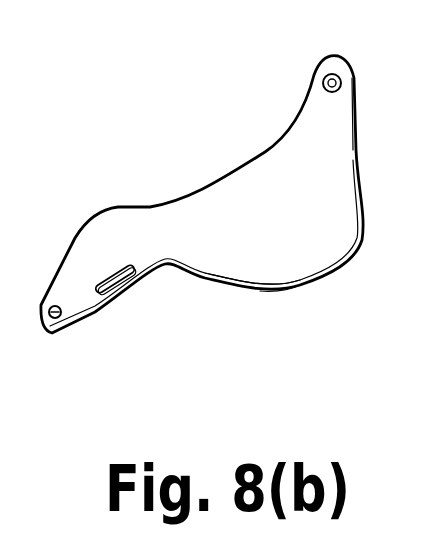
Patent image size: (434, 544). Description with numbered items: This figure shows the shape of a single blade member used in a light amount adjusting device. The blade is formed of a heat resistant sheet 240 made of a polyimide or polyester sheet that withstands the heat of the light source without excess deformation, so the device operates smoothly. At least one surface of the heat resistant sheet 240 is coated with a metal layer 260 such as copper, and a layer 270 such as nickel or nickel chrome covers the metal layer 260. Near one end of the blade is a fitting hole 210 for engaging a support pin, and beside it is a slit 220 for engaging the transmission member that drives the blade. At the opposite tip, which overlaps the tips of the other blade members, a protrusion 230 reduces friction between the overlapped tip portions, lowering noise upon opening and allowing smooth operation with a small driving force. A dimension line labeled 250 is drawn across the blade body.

The fitting hole 210 is at (43, 333).
The slit 220 is at (113, 300).
The protrusion 230 is at (338, 75).
The heat resistant sheet 240 is at (225, 286).
The width dimension 250 is at (382, 333).
The metal layer 260 is at (280, 293).
The layer 270 is at (170, 220).